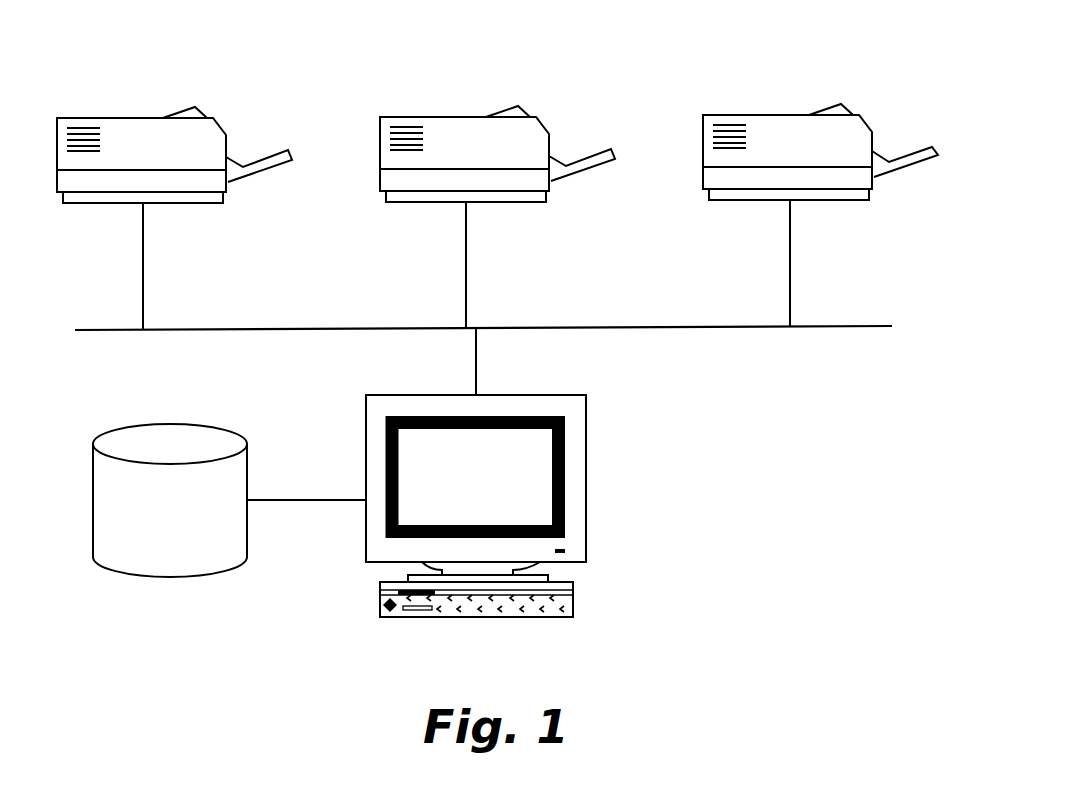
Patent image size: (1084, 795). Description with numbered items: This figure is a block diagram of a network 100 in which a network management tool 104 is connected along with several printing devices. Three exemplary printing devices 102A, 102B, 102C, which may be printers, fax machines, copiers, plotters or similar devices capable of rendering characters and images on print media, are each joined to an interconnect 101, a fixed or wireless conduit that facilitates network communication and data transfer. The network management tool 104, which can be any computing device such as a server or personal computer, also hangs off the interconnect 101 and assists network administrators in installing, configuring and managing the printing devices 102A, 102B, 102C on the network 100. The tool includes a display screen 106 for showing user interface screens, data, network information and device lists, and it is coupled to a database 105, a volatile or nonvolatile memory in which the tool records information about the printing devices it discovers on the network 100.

The network 100 is at (413, 48).
The interconnect 101 is at (245, 329).
The printing device 102A is at (174, 133).
The printing device 102B is at (497, 132).
The printing device 102C is at (820, 130).
The network management tool 104 is at (586, 505).
The database 105 is at (168, 423).
The display screen 106 is at (488, 506).